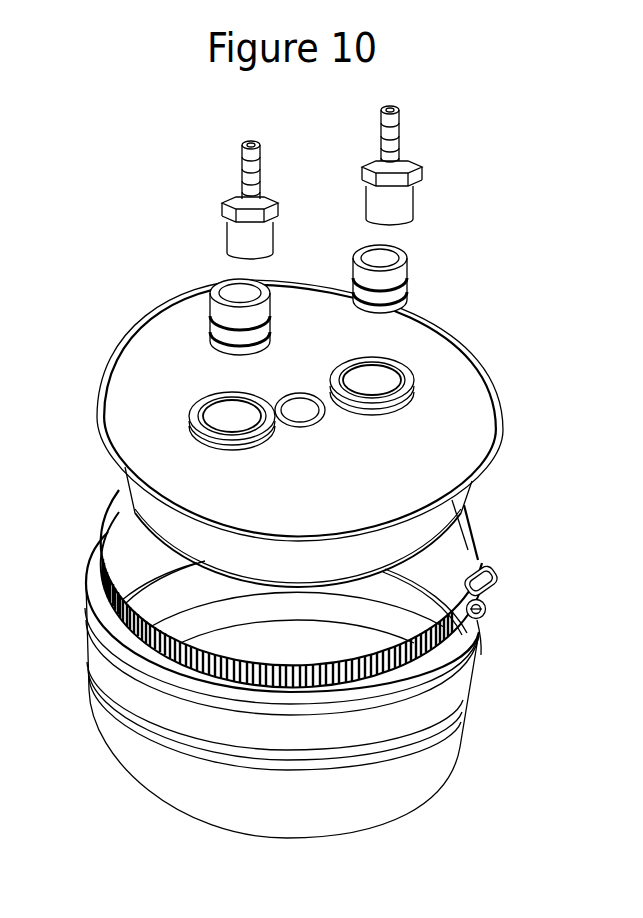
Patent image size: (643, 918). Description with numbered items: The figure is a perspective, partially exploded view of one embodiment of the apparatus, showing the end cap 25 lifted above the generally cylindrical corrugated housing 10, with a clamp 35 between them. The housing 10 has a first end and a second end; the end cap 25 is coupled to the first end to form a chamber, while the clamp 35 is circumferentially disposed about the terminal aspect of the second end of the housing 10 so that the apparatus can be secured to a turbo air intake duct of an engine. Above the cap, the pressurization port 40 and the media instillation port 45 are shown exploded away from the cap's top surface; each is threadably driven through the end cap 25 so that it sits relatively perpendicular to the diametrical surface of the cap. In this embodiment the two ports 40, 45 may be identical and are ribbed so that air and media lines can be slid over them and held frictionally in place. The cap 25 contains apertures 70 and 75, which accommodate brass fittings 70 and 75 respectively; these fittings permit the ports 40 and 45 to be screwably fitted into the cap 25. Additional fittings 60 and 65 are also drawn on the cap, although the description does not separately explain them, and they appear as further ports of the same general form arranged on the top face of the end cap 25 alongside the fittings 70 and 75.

The housing 10 is at (460, 757).
The end cap 25 is at (496, 437).
The clamp 35 is at (481, 630).
The pressurization port 40 is at (398, 155).
The media instillation port 45 is at (240, 195).
The port 60 is at (406, 262).
The port 65 is at (210, 286).
The aperture / brass fitting 70 is at (412, 383).
The aperture / brass fitting 75 is at (188, 433).